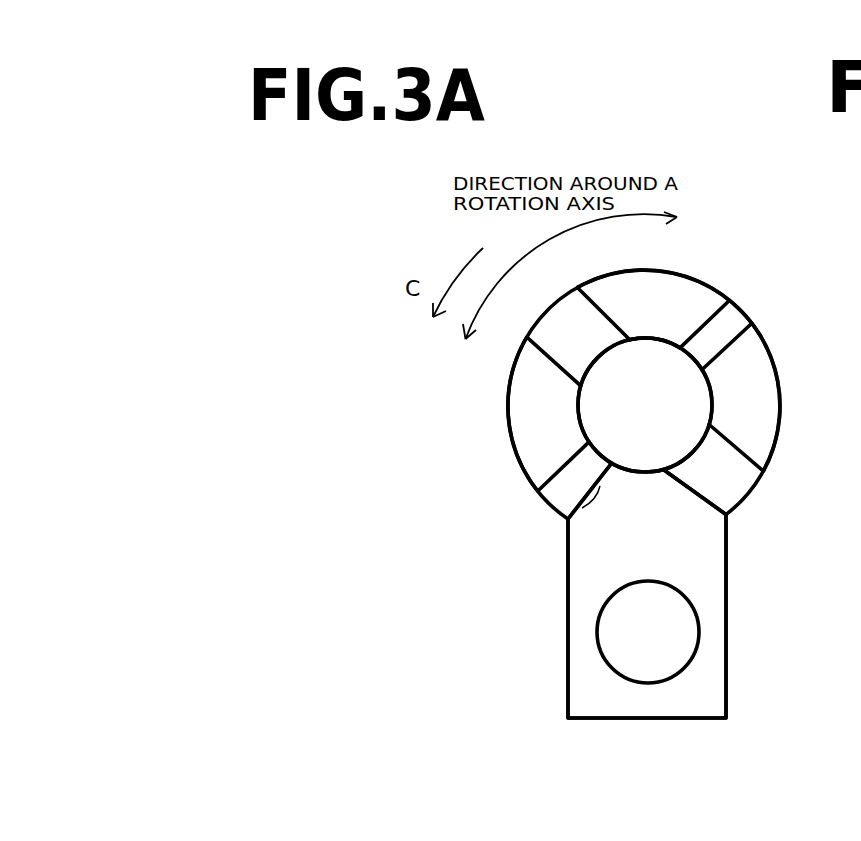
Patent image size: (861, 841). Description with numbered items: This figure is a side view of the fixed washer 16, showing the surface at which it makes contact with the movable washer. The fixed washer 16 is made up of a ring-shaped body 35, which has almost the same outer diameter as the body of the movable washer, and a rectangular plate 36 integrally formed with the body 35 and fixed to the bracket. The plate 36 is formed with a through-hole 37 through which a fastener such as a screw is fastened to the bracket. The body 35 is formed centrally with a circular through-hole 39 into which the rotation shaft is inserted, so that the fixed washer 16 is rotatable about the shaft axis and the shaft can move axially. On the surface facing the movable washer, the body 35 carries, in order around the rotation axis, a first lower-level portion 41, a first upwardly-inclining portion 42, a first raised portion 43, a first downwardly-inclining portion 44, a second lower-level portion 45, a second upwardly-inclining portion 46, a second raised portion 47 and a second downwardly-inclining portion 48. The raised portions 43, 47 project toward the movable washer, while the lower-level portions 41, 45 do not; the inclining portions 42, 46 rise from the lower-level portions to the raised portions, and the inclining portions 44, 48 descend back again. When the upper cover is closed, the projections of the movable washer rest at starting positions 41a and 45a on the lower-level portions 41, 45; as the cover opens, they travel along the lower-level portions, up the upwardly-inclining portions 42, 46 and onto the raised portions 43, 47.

The fixed washer 16 is at (662, 147).
The ring-shaped body 35 is at (767, 335).
The plate 36 is at (730, 632).
The through-hole 37 is at (644, 670).
The through-hole 39 is at (707, 405).
The first lower-level portion 41 is at (653, 297).
The starting position 41a is at (688, 305).
The first upwardly-inclining portion 42 is at (563, 320).
The first raised portion 43 is at (528, 412).
The first downwardly-inclining portion 44 is at (550, 489).
The second lower-level portion 45 is at (637, 492).
The starting position 45a is at (567, 515).
The second upwardly-inclining portion 46 is at (736, 492).
The second raised portion 47 is at (763, 388).
The second downwardly-inclining portion 48 is at (730, 315).